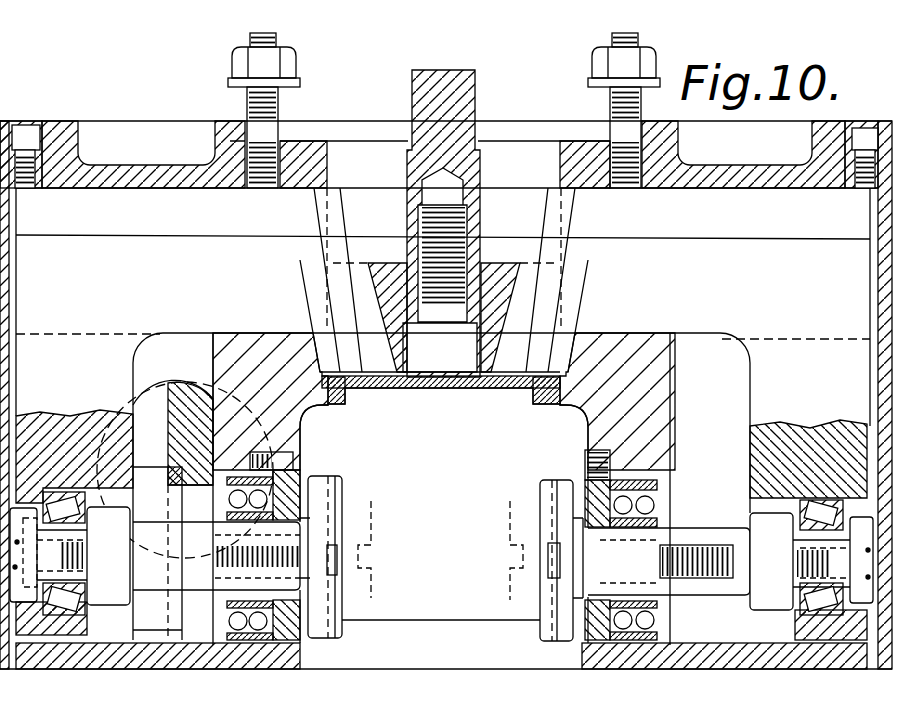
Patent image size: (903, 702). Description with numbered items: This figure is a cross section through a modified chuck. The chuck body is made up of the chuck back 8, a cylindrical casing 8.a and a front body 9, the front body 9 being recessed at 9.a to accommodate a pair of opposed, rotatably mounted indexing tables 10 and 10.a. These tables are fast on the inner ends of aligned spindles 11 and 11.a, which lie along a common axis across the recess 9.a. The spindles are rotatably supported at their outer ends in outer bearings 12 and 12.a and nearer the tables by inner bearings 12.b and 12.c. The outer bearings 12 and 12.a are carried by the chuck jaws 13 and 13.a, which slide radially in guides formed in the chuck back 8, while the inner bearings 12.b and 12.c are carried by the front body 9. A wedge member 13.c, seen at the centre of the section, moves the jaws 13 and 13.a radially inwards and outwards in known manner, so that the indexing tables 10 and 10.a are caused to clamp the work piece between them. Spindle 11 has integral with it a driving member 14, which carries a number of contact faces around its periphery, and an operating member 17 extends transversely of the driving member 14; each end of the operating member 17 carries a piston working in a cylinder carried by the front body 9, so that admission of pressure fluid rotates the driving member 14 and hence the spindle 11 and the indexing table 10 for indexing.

The chuck back 8 is at (98, 168).
The cylindrical casing 8.a is at (5, 279).
The front body 9 is at (240, 656).
The recess 9.a is at (492, 503).
The indexing table 10 is at (333, 484).
The indexing table 10.a is at (548, 482).
The spindle 11 is at (337, 545).
The spindle 11.a is at (560, 541).
The outer bearing 12 is at (155, 553).
The outer bearing 12.a is at (797, 514).
The inner bearing 12.b is at (285, 489).
The inner bearing 12.c is at (662, 488).
The chuck jaw 13 is at (102, 361).
The chuck jaw 13.a is at (805, 371).
The wedge member 13.c is at (497, 263).
The driving member 14 is at (148, 470).
The operating member 17 is at (192, 402).